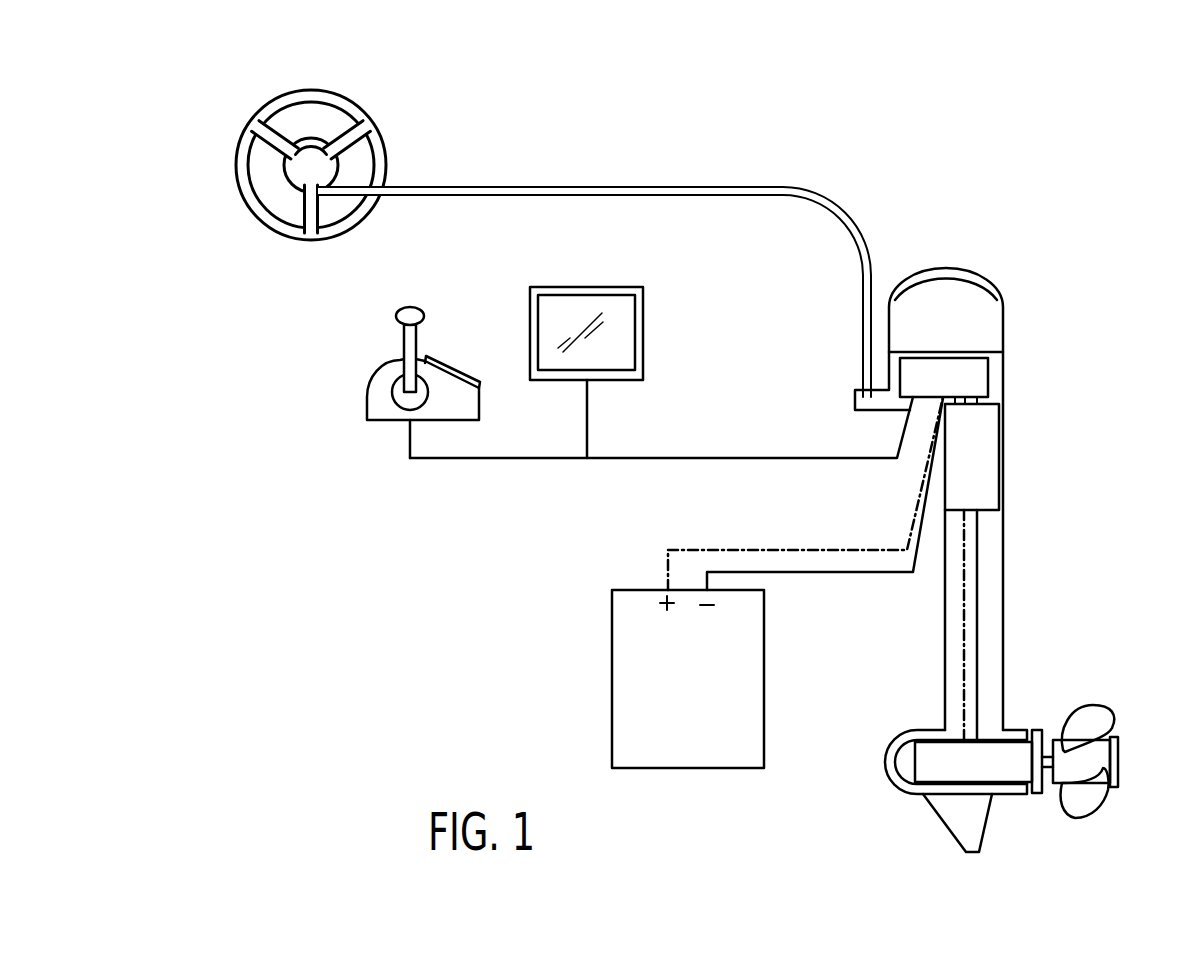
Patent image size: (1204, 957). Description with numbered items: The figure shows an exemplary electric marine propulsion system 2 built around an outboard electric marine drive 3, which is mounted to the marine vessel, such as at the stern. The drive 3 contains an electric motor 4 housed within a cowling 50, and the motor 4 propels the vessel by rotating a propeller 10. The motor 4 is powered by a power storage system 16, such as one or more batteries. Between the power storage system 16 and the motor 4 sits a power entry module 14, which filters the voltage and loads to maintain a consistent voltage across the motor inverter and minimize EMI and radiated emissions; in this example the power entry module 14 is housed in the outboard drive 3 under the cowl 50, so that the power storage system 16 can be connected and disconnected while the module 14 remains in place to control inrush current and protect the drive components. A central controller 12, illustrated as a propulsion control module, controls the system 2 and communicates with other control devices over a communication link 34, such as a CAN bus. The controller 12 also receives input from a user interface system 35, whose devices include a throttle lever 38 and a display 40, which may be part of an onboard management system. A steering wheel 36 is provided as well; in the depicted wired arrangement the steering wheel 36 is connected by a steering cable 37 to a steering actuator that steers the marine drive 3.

The electric propulsion system 2 is at (922, 138).
The electric marine drive 3 is at (990, 282).
The electric motor 4 is at (967, 795).
The propeller 10 is at (1090, 797).
The central controller 12 is at (988, 378).
The power entry module 14 is at (1000, 455).
The power storage system 16 is at (587, 692).
The communication link 34 is at (707, 458).
The user interface system 35 is at (655, 122).
The steering wheel 36 is at (347, 95).
The steering cable 37 is at (573, 186).
The throttle lever 38 is at (410, 306).
The display 40 is at (590, 287).
The cowling 50 is at (945, 268).